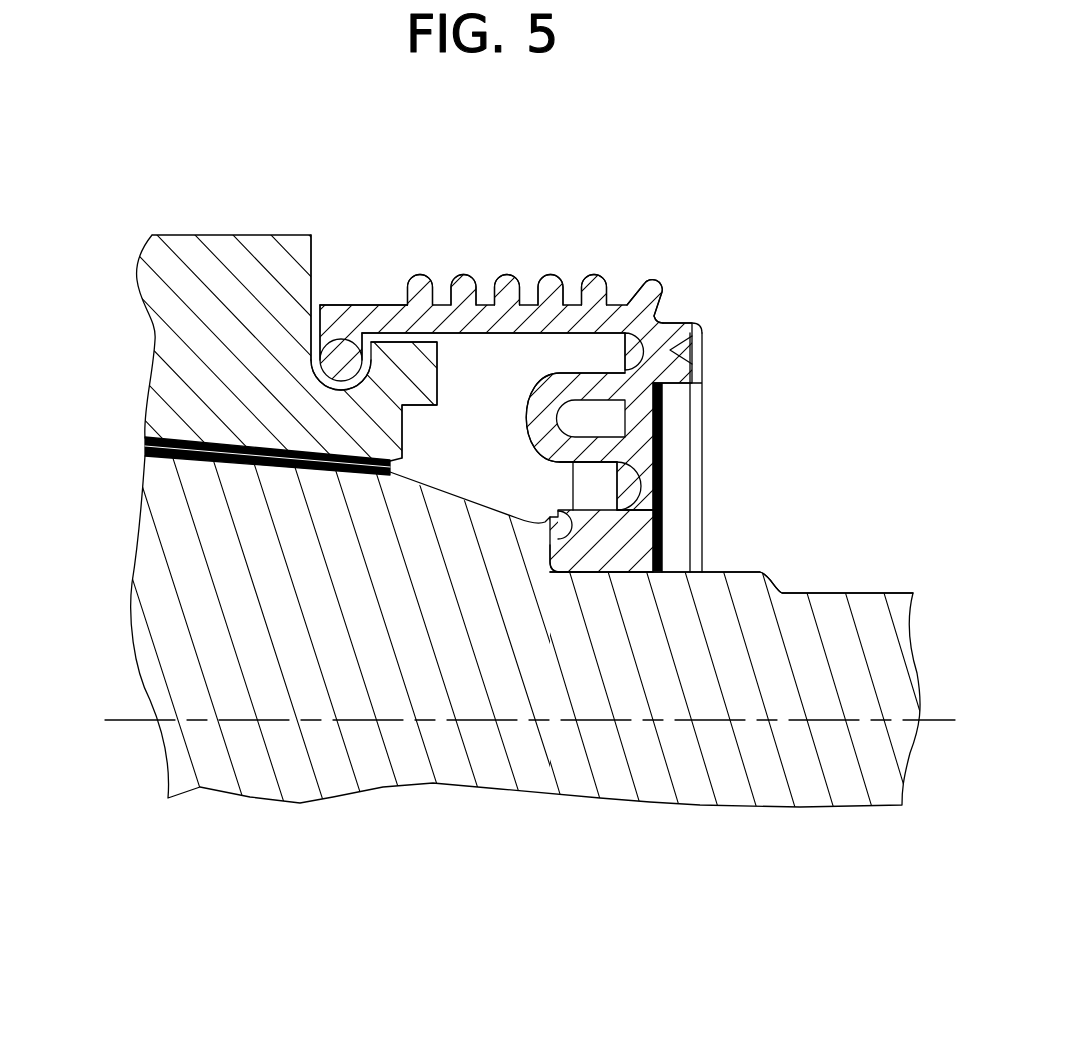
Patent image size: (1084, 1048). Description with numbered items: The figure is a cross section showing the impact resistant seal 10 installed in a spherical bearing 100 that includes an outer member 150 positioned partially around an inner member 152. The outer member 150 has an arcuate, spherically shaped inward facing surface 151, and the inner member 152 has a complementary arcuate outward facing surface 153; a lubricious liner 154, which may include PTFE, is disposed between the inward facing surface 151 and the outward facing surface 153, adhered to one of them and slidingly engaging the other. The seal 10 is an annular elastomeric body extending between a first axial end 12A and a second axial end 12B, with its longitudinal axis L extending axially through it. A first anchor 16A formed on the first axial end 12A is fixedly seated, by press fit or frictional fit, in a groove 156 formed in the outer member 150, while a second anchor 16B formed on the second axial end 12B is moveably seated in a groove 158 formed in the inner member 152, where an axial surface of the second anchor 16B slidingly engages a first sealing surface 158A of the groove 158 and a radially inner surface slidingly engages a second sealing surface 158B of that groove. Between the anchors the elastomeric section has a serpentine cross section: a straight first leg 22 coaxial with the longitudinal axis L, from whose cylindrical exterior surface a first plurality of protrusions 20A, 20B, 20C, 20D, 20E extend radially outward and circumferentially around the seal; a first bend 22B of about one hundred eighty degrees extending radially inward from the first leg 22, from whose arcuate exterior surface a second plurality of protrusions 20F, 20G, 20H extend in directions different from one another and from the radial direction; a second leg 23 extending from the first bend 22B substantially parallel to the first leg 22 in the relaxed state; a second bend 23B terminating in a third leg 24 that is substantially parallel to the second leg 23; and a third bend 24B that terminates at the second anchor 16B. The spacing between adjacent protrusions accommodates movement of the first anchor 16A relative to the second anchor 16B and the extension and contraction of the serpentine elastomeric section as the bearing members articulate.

The impact resistant seal 10 is at (695, 158).
The first axial end 12A is at (296, 347).
The second axial end 12B is at (653, 578).
The first anchor 16A is at (343, 355).
The second anchor 16B is at (640, 578).
The protrusion 20A is at (422, 288).
The protrusion 20B is at (462, 283).
The protrusion 20C is at (508, 283).
The protrusion 20D is at (553, 283).
The protrusion 20E is at (597, 283).
The protrusion 20F is at (655, 293).
The protrusion 20G is at (693, 328).
The protrusion 20H is at (695, 375).
The first leg 22 is at (505, 318).
The first bend 22B is at (672, 350).
The second leg 23 is at (603, 381).
The second bend 23B is at (535, 410).
The third leg 24 is at (562, 452).
The third bend 24B is at (650, 487).
The spherical bearing 100 is at (127, 212).
The outer member 150 is at (185, 257).
The inward facing surface 151 is at (183, 440).
The inner member 152 is at (175, 613).
The outward facing surface 153 is at (398, 482).
The lubricious liner 154 is at (143, 442).
The groove 156 is at (328, 400).
The groove 158 is at (583, 570).
The first sealing surface 158A is at (562, 518).
The block corner 158B is at (555, 568).
The longitudinal axis L is at (949, 727).